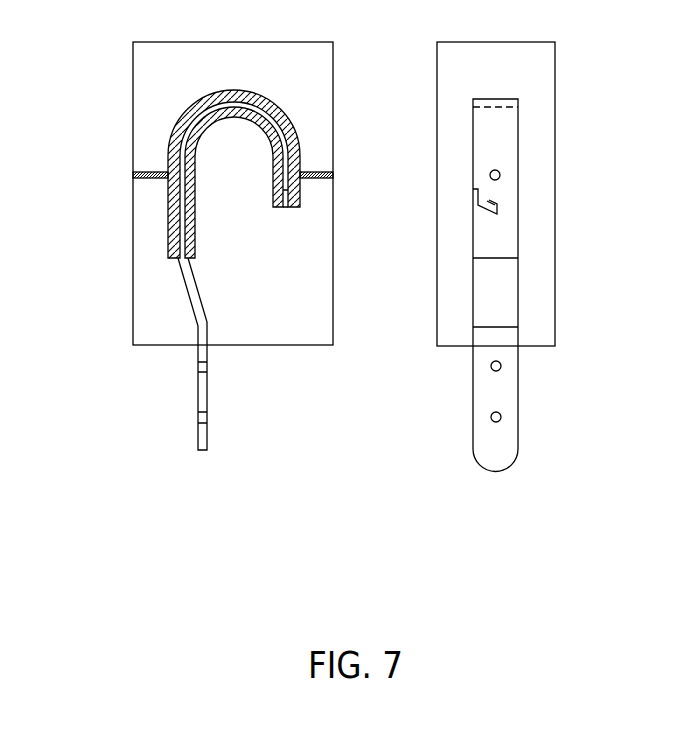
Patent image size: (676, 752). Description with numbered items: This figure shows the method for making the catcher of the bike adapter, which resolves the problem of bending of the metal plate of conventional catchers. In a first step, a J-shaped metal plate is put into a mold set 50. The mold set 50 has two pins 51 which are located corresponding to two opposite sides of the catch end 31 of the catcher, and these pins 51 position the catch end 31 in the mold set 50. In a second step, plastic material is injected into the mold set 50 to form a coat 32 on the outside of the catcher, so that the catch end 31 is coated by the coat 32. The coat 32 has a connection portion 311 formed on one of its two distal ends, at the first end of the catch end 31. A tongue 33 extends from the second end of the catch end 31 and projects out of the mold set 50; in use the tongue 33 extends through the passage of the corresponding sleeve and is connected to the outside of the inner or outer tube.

The mold set 50 is at (135, 110).
The pins 51 is at (134, 180).
The catch end 31 is at (338, 251).
The coat 32 is at (168, 153).
The connection portion 311 is at (495, 204).
The tongue 33 is at (200, 400).